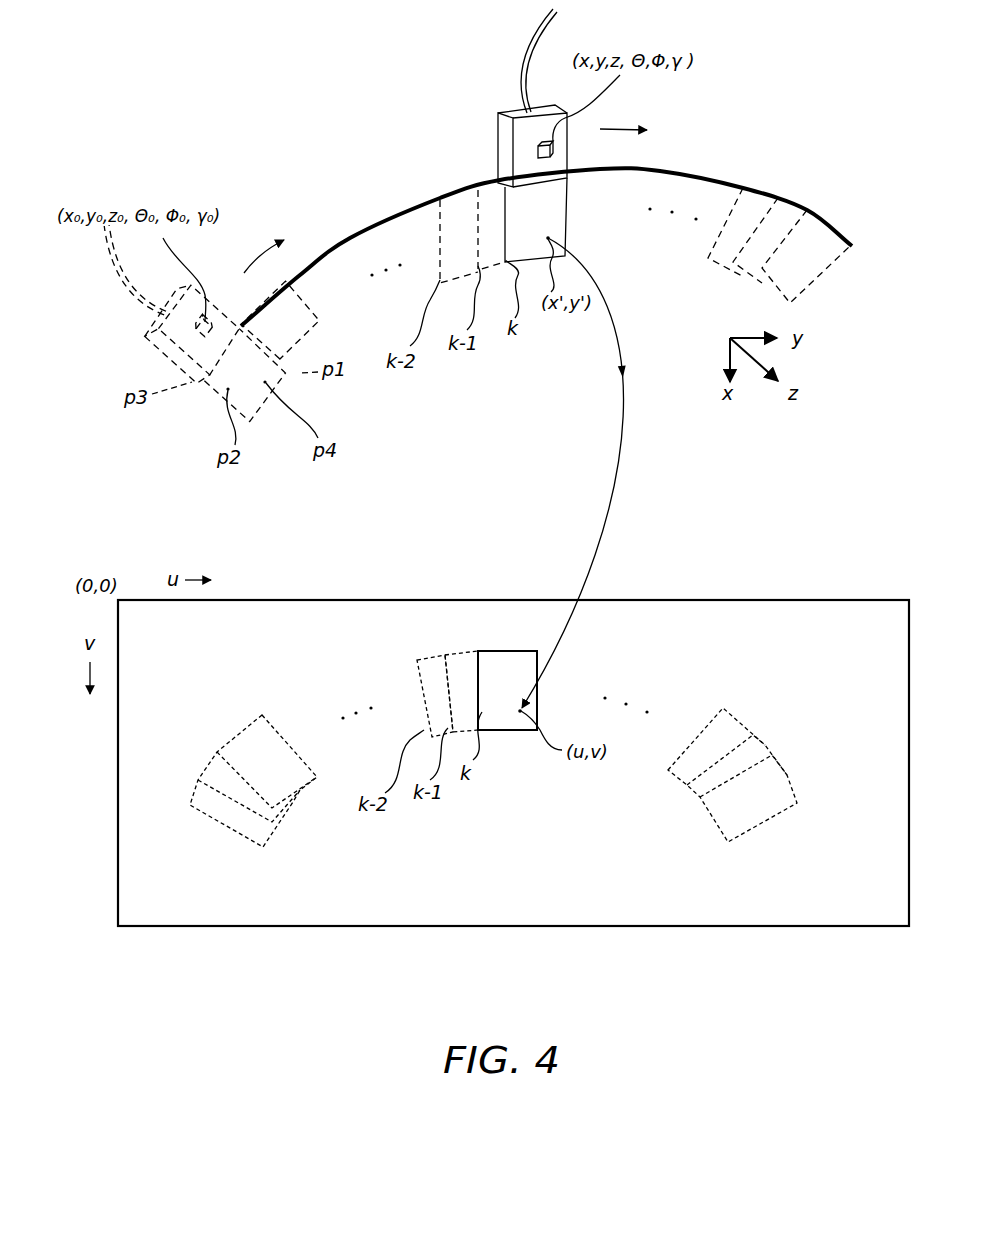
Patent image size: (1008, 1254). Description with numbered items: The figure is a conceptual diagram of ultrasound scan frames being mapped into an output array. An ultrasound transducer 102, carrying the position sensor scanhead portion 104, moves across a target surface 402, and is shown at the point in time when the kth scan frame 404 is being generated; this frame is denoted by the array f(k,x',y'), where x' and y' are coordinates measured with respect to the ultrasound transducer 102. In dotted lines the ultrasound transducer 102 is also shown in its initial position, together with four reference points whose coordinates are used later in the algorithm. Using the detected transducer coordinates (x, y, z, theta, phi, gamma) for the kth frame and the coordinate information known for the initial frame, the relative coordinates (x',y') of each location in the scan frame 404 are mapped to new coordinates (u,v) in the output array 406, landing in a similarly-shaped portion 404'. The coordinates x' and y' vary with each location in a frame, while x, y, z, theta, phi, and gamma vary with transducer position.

The ultrasound transducer 102 is at (498, 116).
The position sensor scanhead portion 104 is at (538, 150).
The target surface 402 is at (722, 180).
The kth scan frame 404 is at (581, 220).
The similarly-shaped portion 404' is at (510, 631).
The output array 406 is at (340, 600).